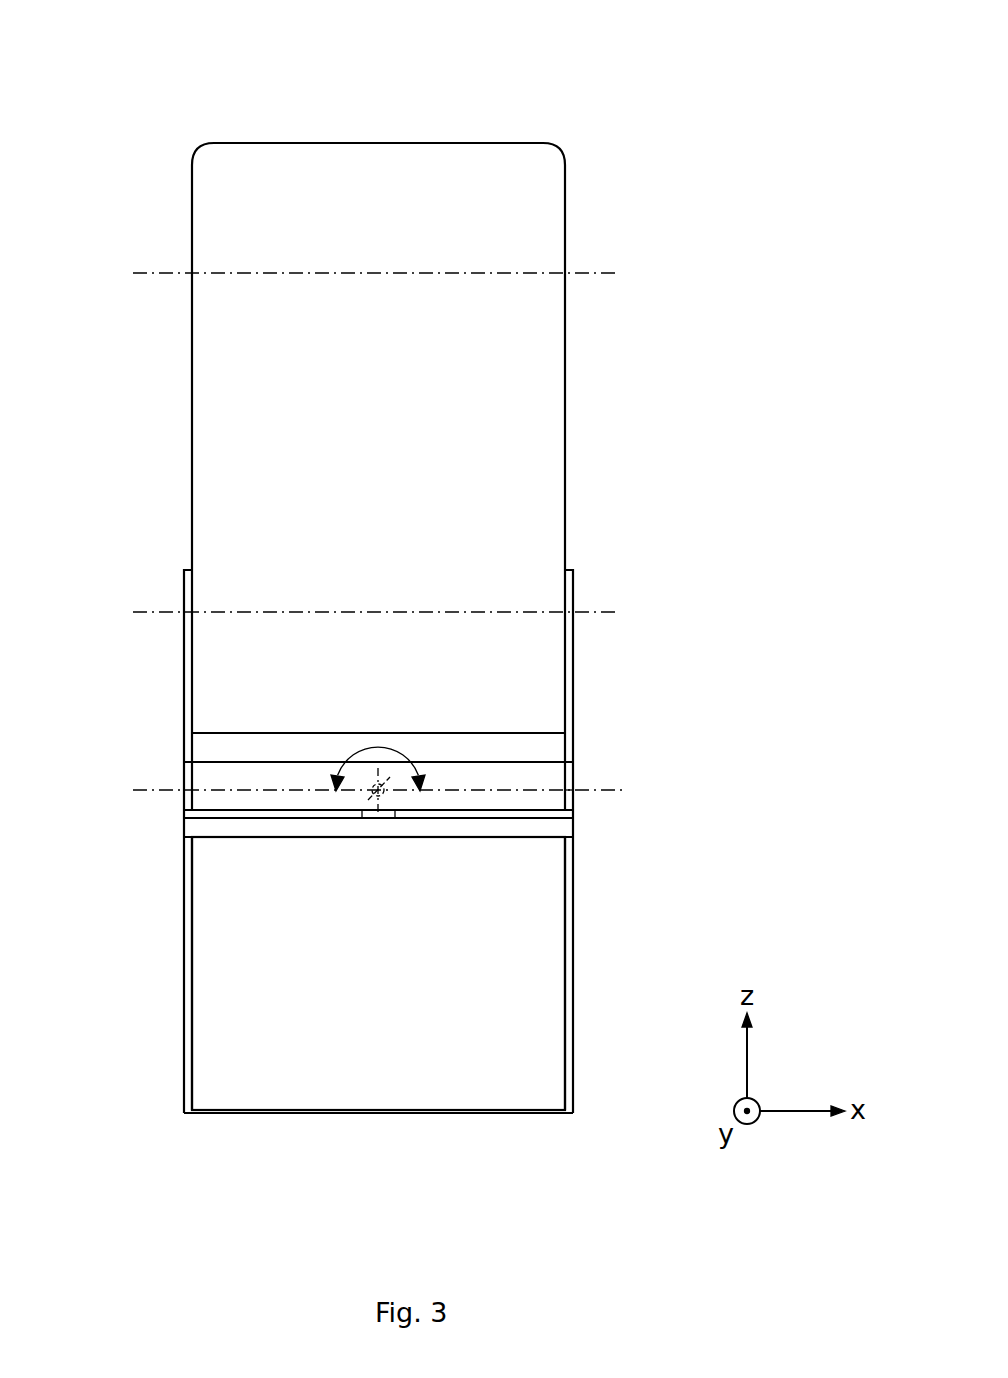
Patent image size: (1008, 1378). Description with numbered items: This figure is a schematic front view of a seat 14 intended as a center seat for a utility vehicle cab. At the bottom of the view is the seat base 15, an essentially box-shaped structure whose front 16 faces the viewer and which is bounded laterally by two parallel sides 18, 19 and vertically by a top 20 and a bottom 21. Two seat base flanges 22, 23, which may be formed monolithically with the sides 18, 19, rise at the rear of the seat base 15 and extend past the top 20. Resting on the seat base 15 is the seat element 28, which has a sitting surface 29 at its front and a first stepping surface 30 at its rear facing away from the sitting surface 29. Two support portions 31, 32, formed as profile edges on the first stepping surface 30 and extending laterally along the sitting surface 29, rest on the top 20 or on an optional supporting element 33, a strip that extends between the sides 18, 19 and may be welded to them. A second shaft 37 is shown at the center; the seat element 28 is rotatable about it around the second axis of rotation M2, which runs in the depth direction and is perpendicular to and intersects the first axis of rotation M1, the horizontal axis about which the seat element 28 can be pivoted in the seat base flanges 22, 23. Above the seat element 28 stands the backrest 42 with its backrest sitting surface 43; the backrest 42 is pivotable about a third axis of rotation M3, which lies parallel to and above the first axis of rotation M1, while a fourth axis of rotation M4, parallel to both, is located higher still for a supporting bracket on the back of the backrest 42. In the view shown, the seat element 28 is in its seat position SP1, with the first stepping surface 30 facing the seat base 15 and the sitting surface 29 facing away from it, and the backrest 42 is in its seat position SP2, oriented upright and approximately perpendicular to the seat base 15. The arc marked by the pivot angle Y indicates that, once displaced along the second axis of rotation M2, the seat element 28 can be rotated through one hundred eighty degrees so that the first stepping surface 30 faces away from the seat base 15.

The seat 14 is at (731, 168).
The seat base 15 is at (170, 965).
The front 16 is at (387, 998).
The side 18 is at (186, 932).
The side 19 is at (573, 945).
The top 20 is at (222, 828).
The bottom 21 is at (377, 1113).
The seat base flange 22 is at (185, 648).
The seat base flange 23 is at (567, 648).
The seat element 28 is at (452, 747).
The sitting surface 29 is at (492, 752).
The first stepping surface 30 is at (503, 822).
The support portion 31 is at (185, 800).
The support portion 32 is at (568, 800).
The supporting element 33 is at (297, 830).
The second shaft 37 is at (395, 818).
The backrest 42 is at (378, 128).
The backrest sitting surface 43 is at (389, 398).
The first axis of rotation M1 is at (143, 790).
The second axis of rotation M2 is at (362, 818).
The third axis of rotation M3 is at (140, 612).
The fourth axis of rotation M4 is at (140, 273).
The seat position SP1 is at (665, 762).
The seat position SP2 is at (660, 368).
The pivot angle Y is at (378, 747).